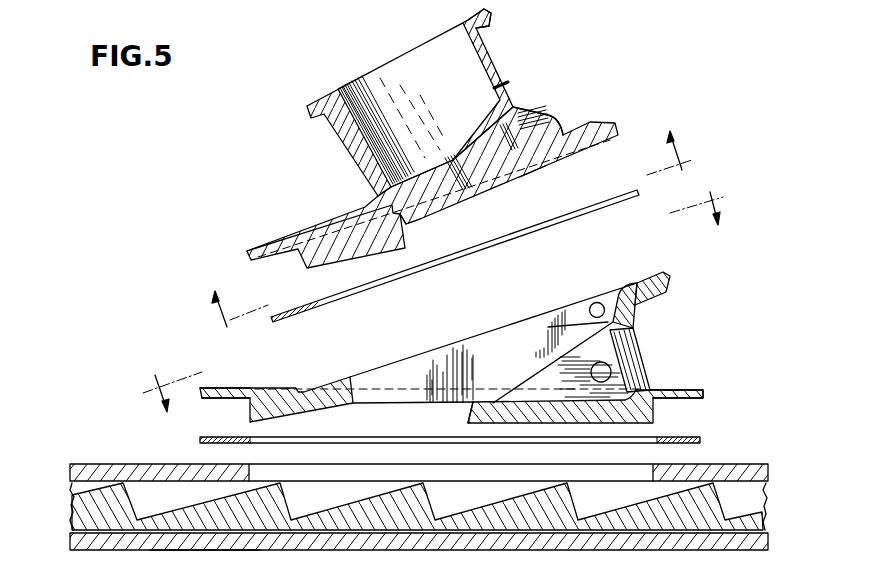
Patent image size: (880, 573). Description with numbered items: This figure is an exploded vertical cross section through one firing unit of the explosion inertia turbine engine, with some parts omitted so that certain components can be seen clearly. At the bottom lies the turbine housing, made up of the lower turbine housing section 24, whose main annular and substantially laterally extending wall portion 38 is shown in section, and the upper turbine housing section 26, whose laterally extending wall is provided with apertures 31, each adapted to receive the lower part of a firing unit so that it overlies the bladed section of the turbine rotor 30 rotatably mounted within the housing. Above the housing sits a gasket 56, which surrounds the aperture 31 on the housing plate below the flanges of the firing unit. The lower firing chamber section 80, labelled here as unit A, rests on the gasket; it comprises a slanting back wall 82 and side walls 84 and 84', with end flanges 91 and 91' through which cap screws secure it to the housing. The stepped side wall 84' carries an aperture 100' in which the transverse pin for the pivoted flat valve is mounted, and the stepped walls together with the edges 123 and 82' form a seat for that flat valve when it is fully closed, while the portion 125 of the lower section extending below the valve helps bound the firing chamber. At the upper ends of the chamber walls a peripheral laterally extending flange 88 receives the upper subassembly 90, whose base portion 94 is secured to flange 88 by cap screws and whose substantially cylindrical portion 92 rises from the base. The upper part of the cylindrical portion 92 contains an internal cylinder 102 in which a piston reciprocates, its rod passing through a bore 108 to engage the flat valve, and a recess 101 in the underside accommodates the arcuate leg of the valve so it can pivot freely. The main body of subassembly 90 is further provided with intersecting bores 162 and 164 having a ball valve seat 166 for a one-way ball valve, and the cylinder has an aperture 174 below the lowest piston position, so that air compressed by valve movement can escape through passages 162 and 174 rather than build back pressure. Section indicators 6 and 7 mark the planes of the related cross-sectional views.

The internal cylinder 102 is at (478, 37).
The substantially cylindrical portion 92 is at (493, 62).
The upper subassembly 90 is at (554, 83).
The aperture 174 is at (491, 98).
The bore 162 is at (502, 130).
The bore 164 is at (534, 137).
The base portion 94 is at (260, 248).
The ball valve seat 166 is at (528, 160).
The bore 108 is at (470, 192).
The recess 101 is at (407, 222).
The section line 6- 6 is at (447, 229).
The section line 7- 7 is at (433, 295).
The bracket A is at (267, 388).
The end flange 91' is at (214, 402).
The side wall 84' is at (496, 356).
The side wall 84 is at (583, 377).
The edge 82' is at (567, 327).
The aperture 100' is at (593, 297).
The peripheral laterally extending flange 88 is at (668, 283).
The lower firing chamber section 80 is at (621, 313).
The slanting back wall 82 is at (617, 360).
The portion of lower firing unit section 125 is at (550, 413).
The end flange 91 is at (689, 383).
The edge 123 is at (473, 410).
The gasket 56 is at (697, 438).
The upper turbine housing section 26 is at (90, 476).
The aperture 31 is at (293, 470).
The turbine rotor 30 is at (93, 510).
The lower turbine housing section 24 is at (152, 540).
The main annular wall portion 38 is at (208, 543).